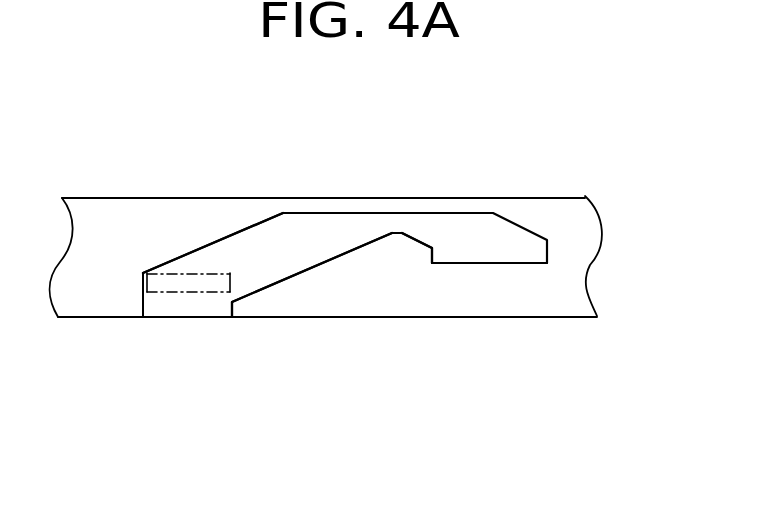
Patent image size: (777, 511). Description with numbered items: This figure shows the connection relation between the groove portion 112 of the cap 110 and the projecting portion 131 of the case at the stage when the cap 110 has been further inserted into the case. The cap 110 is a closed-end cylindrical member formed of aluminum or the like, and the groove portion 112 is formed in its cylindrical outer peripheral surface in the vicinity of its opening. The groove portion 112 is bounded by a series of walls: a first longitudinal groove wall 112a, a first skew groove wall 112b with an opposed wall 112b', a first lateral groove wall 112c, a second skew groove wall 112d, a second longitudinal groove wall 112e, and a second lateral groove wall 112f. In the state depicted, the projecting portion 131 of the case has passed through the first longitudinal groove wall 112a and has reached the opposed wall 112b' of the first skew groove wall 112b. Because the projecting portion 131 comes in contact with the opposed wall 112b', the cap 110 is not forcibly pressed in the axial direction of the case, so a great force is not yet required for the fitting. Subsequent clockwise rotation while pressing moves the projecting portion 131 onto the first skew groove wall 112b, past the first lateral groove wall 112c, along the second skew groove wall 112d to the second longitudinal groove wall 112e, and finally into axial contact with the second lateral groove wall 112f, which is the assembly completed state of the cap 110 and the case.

The cap 110 is at (115, 216).
The groove portion 112 is at (285, 258).
The first longitudinal groove wall 112a is at (231, 305).
The first skew groove wall 112b is at (379, 314).
The opposed wall 112b' is at (213, 201).
The first lateral groove wall 112c is at (395, 232).
The second skew groove wall 112d is at (418, 238).
The second longitudinal groove wall 112e is at (437, 259).
The second lateral groove wall 112f is at (493, 262).
The projecting portion 131 is at (188, 287).